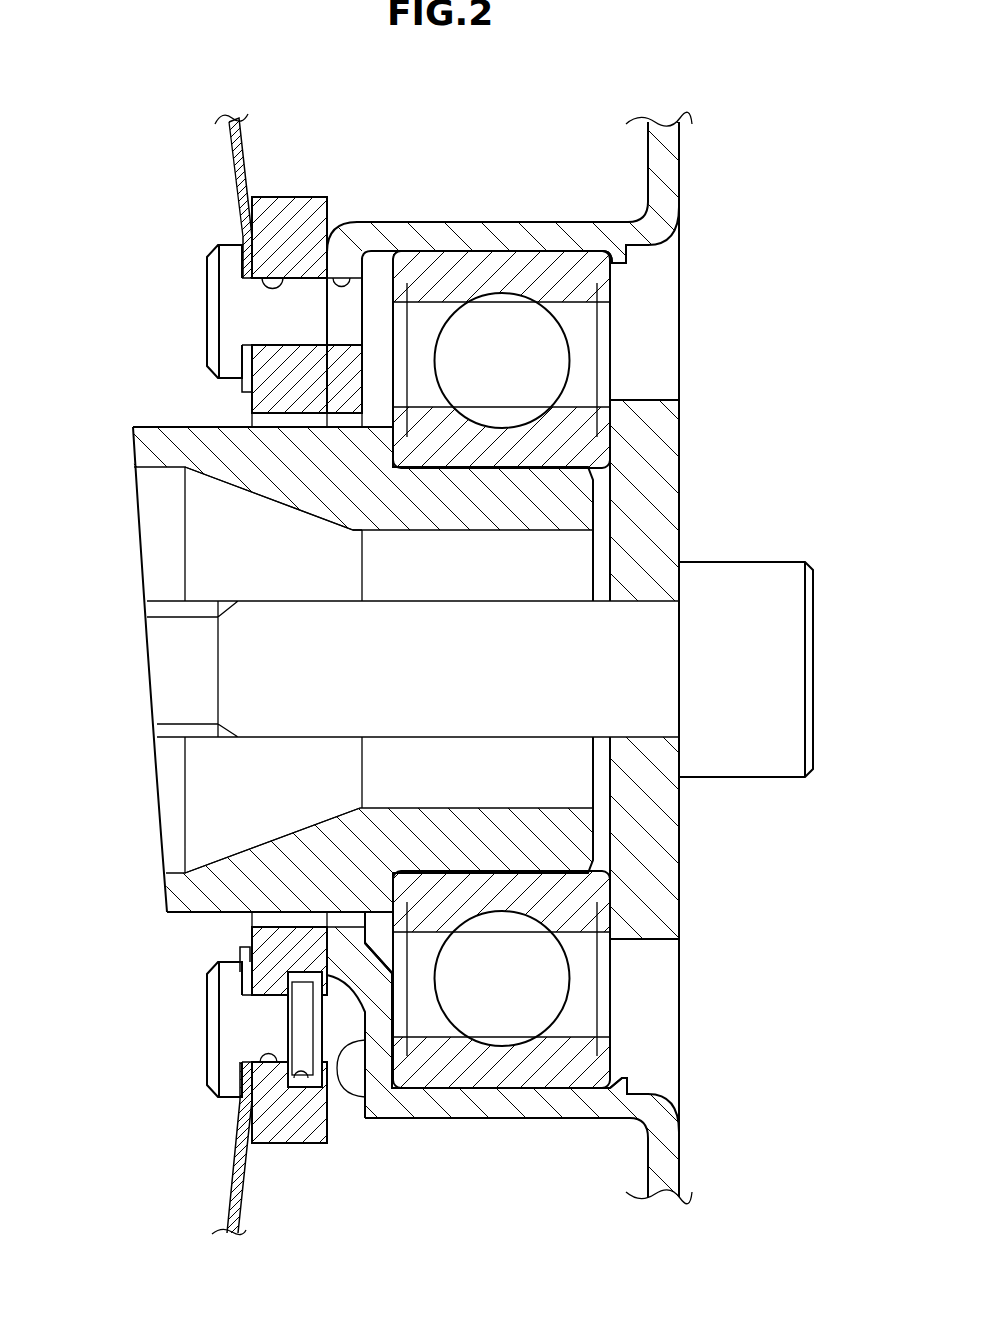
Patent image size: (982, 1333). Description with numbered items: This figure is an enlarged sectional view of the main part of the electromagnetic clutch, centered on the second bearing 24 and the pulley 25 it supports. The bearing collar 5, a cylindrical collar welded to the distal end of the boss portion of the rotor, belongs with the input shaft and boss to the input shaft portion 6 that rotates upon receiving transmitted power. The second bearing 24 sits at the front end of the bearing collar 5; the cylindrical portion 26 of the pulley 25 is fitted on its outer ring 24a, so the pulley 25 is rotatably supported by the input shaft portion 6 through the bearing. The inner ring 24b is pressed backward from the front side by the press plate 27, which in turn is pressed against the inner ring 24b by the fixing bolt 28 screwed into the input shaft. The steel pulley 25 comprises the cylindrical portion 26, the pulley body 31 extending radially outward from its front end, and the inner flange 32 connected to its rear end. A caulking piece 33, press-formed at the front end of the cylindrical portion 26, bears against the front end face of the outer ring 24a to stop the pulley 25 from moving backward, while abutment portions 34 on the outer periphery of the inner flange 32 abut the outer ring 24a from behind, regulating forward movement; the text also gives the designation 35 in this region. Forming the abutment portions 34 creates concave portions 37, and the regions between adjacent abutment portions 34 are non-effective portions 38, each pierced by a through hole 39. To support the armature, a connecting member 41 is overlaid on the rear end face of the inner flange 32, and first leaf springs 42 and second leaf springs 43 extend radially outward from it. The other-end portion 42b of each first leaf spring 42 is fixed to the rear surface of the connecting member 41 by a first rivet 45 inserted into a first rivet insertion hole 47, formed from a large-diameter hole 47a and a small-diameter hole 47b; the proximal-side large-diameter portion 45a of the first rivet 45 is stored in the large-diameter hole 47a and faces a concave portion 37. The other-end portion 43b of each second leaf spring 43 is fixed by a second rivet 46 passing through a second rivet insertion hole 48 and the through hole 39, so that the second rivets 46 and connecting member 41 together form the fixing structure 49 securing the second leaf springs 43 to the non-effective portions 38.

The bearing collar 5 is at (598, 508).
The input shaft portion 6 is at (134, 451).
The second bearing 24 is at (578, 669).
The outer ring 24a is at (603, 280).
The inner ring 24b is at (592, 445).
The pulley 25 is at (680, 137).
The cylindrical portion 26 is at (507, 233).
The press plate 27 is at (668, 898).
The fixing bolt 28 is at (768, 780).
The pulley body 31 is at (667, 169).
The inner flange 32 is at (333, 413).
The caulking piece 33 is at (625, 262).
The abutment portion 34 is at (390, 992).
The positioning surface 35 is at (378, 958).
The concave portion 37 is at (327, 1065).
The non-effective portion 38 is at (335, 377).
The through hole 39 is at (356, 280).
The connecting member 41 is at (270, 197).
The first leaf spring 42 is at (230, 1173).
The other-end portion 42b is at (238, 952).
The second leaf spring 43 is at (230, 140).
The other-end portion 43b is at (240, 384).
The first rivet 45 is at (207, 1038).
The proximal-side large-diameter portion 45a is at (300, 972).
The second rivet 46 is at (207, 280).
The first rivet insertion hole 47 is at (347, 1220).
The large-diameter hole 47a is at (300, 1067).
The small-diameter hole 47b is at (265, 1047).
The second rivet insertion hole 48 is at (292, 273).
The fixing structure 49 is at (312, 197).